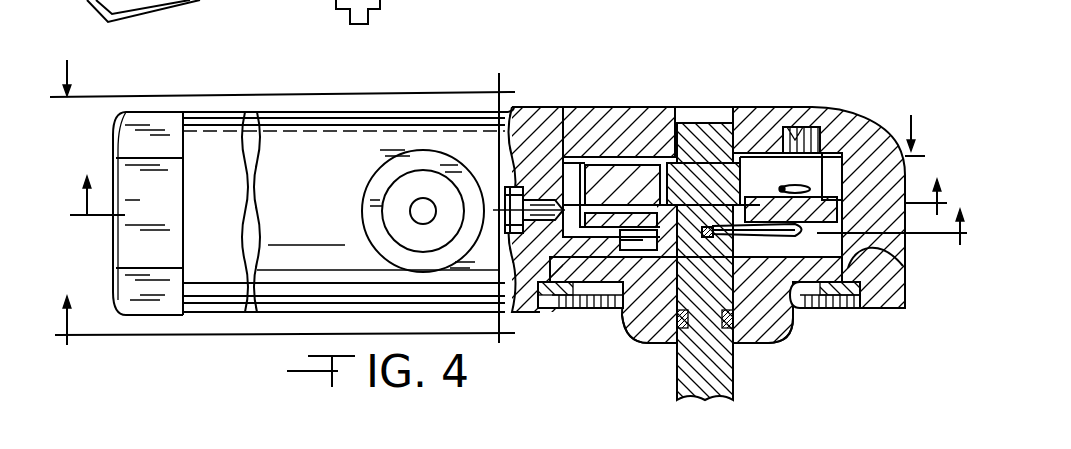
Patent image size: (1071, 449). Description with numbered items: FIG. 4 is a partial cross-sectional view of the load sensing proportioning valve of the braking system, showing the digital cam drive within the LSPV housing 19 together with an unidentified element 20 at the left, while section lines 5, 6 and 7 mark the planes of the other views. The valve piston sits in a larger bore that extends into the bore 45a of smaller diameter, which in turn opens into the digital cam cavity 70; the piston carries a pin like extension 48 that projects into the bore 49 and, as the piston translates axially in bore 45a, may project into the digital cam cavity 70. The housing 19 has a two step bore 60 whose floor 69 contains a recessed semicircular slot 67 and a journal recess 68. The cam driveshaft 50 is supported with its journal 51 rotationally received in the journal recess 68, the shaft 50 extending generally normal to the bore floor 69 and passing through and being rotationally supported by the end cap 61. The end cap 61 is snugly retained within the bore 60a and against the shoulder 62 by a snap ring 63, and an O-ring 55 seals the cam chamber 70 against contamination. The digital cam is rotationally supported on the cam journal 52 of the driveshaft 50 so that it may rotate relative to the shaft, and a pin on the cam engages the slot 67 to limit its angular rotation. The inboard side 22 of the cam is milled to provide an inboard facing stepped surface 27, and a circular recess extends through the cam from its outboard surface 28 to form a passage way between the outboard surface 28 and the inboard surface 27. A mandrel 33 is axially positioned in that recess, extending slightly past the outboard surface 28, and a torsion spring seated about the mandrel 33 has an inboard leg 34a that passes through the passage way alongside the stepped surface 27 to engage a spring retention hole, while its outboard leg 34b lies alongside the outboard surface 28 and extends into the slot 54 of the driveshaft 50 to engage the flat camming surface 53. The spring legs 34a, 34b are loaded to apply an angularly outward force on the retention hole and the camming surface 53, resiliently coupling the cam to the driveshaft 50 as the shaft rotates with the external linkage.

The section line 5- 5 is at (508, 208).
The section line 6- 6 is at (511, 256).
The section line 7- 7 is at (487, 93).
The LSPV housing 19 is at (910, 300).
The tubular body 20 is at (413, 104).
The inboard side 22 is at (668, 136).
The inboard facing stepped surface 27 is at (836, 108).
The outboard surface 28 is at (620, 228).
The mandrel 33 is at (782, 237).
The inboard leg 34a is at (782, 185).
The outboard spring leg 34b is at (710, 237).
The bore 45a is at (523, 187).
The pin like extension 48 is at (525, 243).
The bore 49 is at (552, 200).
The cam driveshaft 50 is at (733, 378).
The journal 51 is at (672, 120).
The cam journal 52 is at (737, 121).
The flat camming surface 53 is at (697, 228).
The slot 54 is at (735, 262).
The O-ring 55 is at (658, 345).
The two step bore 60 is at (842, 152).
The bore 60a is at (880, 265).
The end cap 61 is at (765, 345).
The shoulder 62 is at (905, 266).
The snap ring 63 is at (827, 300).
The semicircular slot 67 is at (808, 127).
The journal recess 68 is at (720, 115).
The floor 69 is at (617, 165).
The digital cam cavity 70 is at (598, 247).